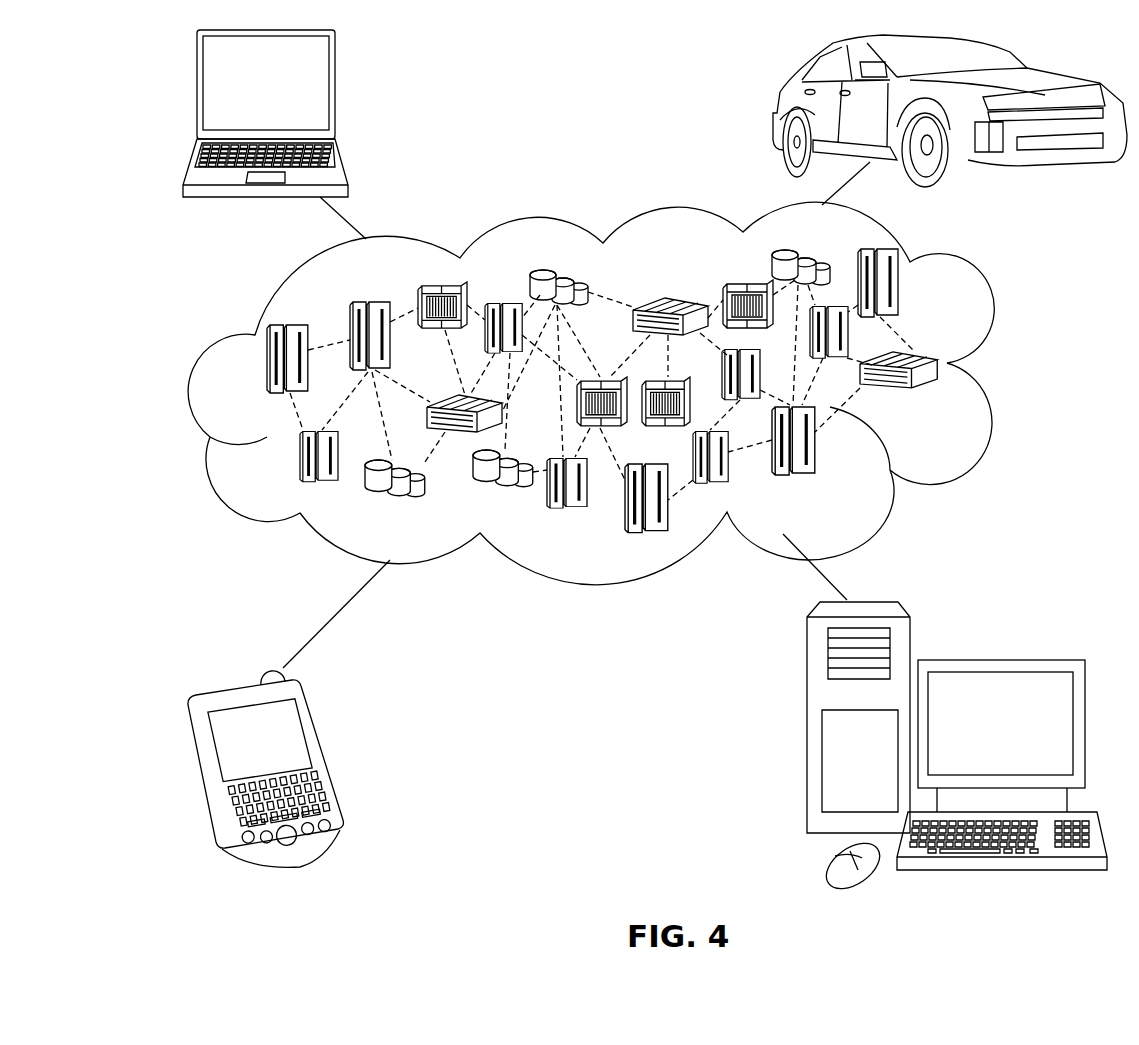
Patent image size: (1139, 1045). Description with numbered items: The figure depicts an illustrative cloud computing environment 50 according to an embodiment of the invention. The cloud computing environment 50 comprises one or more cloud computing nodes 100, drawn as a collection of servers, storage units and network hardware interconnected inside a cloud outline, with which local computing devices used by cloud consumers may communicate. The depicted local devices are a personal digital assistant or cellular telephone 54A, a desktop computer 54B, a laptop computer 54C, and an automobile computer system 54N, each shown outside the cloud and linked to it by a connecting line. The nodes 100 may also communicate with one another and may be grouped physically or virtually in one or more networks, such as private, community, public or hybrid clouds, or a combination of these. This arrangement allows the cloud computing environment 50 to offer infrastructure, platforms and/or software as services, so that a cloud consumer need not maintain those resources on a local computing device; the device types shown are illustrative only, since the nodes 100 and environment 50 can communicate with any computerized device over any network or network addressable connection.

The cloud computing environment 50 is at (998, 369).
The cloud computing nodes 100 is at (938, 397).
The personal digital assistant or cellular telephone 54A is at (323, 755).
The desktop computer 54B is at (997, 658).
The laptop computer 54C is at (335, 92).
The automobile computer system 54N is at (778, 110).